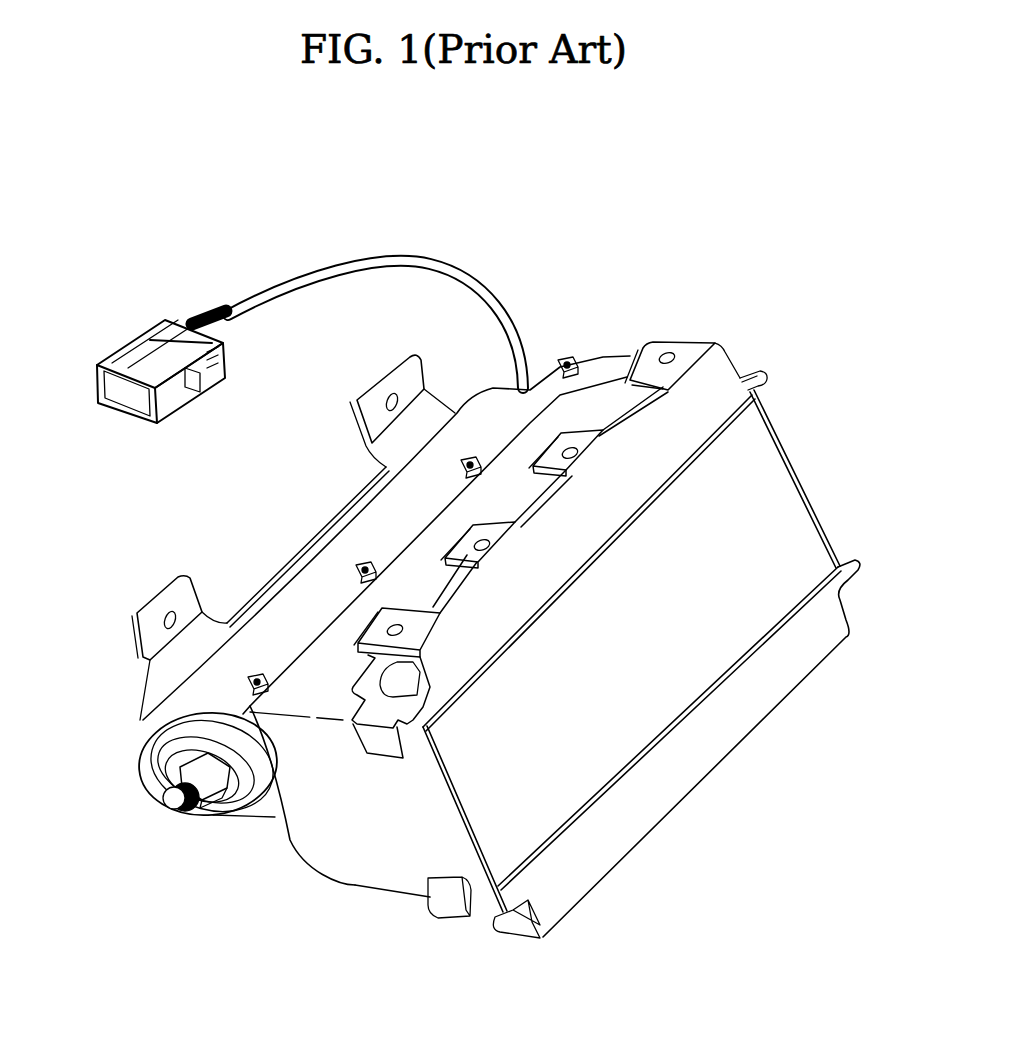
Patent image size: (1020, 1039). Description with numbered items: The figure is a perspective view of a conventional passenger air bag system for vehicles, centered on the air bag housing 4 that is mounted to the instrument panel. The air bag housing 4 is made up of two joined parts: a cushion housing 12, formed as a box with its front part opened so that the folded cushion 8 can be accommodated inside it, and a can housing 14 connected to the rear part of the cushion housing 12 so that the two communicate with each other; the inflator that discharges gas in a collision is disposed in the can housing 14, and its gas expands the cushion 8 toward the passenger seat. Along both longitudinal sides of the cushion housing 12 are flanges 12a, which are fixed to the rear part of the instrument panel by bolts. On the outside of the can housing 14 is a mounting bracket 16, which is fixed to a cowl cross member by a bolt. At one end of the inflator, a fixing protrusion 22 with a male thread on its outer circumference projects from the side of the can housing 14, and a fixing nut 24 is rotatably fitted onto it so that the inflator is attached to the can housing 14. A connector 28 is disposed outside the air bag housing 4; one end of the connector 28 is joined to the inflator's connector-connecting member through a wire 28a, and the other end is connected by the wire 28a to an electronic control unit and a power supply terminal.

The air bag housing 4 is at (454, 622).
The cushion 8 is at (530, 832).
The cushion housing 12 is at (360, 840).
The flange 12a is at (688, 352).
The can housing 14 is at (275, 820).
The mounting bracket 16 is at (147, 630).
The fixing protrusion 22 is at (172, 808).
The fixing nut 24 is at (210, 812).
The connector 28 is at (160, 326).
The wire 28a is at (400, 264).